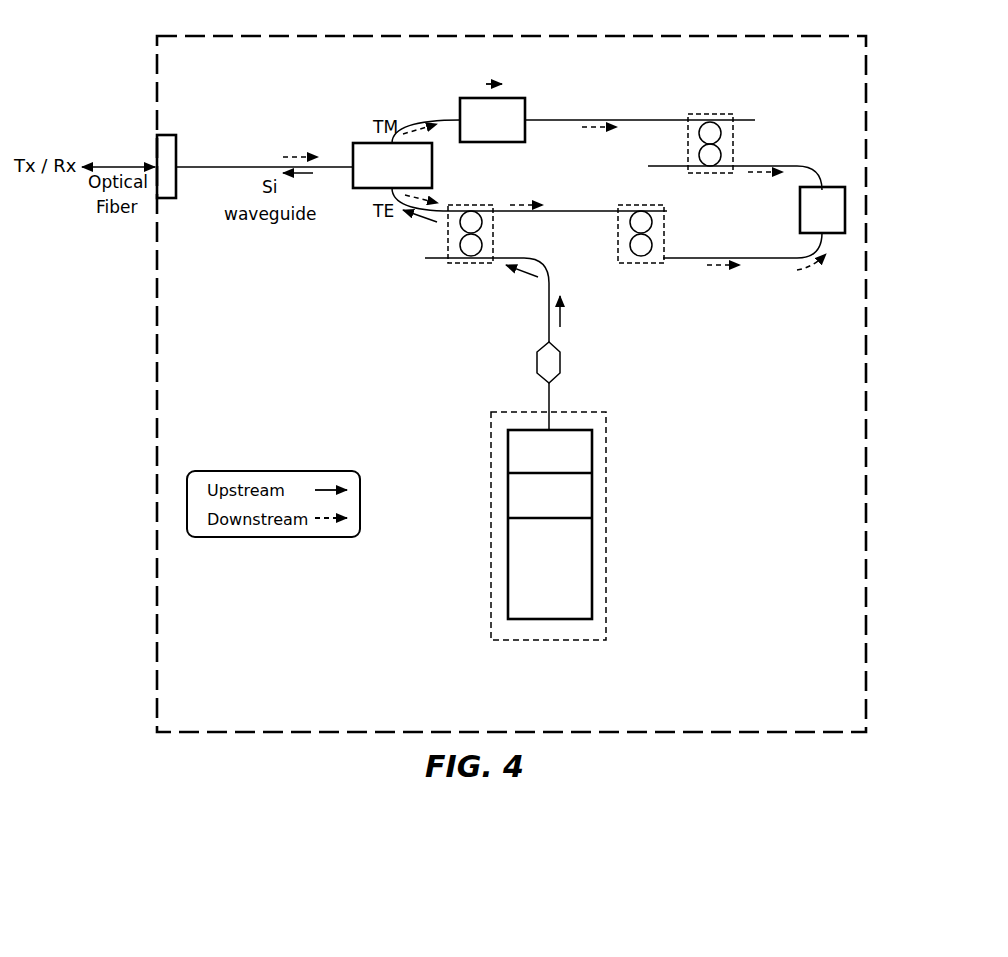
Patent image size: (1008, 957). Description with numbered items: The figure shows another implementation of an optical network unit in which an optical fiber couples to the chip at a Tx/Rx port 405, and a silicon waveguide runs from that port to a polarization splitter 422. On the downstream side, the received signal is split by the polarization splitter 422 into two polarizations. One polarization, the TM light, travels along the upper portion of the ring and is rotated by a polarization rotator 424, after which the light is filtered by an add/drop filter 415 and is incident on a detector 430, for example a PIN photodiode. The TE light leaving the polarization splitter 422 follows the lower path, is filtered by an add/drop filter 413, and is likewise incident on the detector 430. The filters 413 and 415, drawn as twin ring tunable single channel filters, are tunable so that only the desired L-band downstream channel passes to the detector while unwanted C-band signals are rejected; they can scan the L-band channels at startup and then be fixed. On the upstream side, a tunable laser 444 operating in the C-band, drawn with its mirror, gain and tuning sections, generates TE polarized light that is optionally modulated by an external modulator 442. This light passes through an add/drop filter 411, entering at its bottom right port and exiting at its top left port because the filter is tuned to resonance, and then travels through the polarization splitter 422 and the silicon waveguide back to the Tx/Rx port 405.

The Tx/Rx port 405 is at (176, 147).
The add/drop filter 411 is at (493, 240).
The add/drop filter 413 is at (664, 232).
The add/drop filter 415 is at (733, 143).
The polarization splitter 422 is at (432, 167).
The polarization rotator 424 is at (490, 142).
The detector 430 is at (800, 200).
The external modulator 442 is at (560, 362).
The tunable laser 444 is at (606, 538).